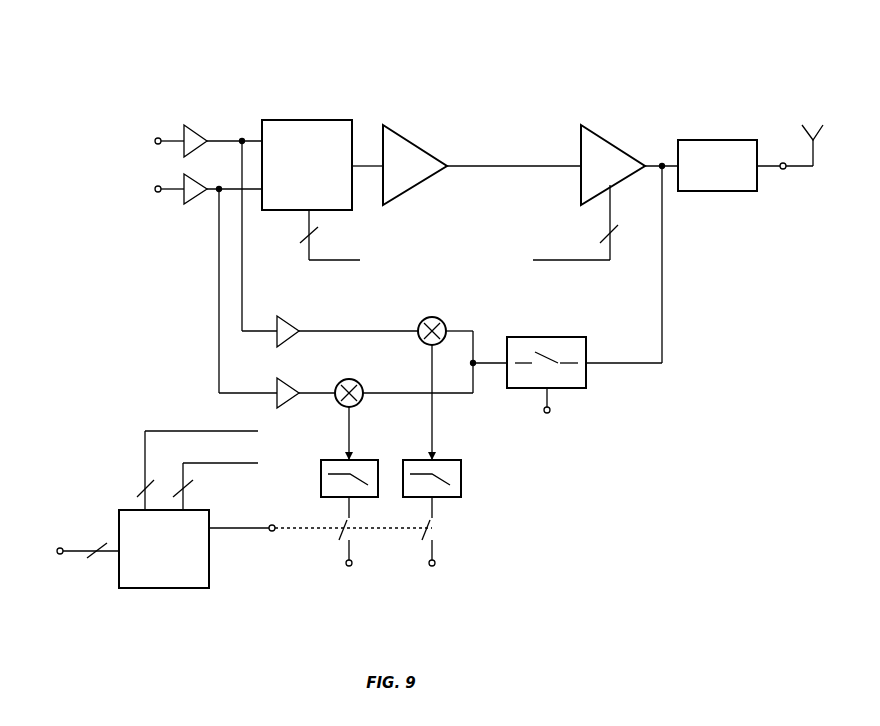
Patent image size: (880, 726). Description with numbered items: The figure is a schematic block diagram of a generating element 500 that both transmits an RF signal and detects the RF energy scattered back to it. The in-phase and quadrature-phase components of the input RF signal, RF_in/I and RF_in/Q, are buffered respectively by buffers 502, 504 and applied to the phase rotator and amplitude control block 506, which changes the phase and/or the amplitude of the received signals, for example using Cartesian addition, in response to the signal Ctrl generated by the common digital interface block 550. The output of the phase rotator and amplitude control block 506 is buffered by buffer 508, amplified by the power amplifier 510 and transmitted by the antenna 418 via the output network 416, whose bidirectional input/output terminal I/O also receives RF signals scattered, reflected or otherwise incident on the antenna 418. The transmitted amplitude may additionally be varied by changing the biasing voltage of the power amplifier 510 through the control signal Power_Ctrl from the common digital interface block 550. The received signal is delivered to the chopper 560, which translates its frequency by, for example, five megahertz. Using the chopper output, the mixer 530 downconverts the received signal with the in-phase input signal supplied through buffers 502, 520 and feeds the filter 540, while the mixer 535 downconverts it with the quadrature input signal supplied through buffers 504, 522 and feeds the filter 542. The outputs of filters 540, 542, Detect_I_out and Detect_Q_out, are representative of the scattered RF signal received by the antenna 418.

The generating element 500 is at (742, 50).
The buffer 502 is at (196, 128).
The buffer 504 is at (199, 200).
The phase rotator and amplitude control block 506 is at (312, 120).
The buffer 508 is at (414, 140).
The power amplifier 510 is at (614, 140).
The output network 416 is at (718, 140).
The antenna 418 is at (807, 128).
The in-phase feedback amplifier 520 is at (286, 322).
The quadrature feedback amplifier 522 is at (291, 378).
The mixer 530 is at (437, 317).
The mixer 535 is at (356, 379).
The filter 540 is at (441, 452).
The filter 542 is at (357, 452).
The common digital interface block 550 is at (164, 590).
The chopper 560 is at (588, 374).